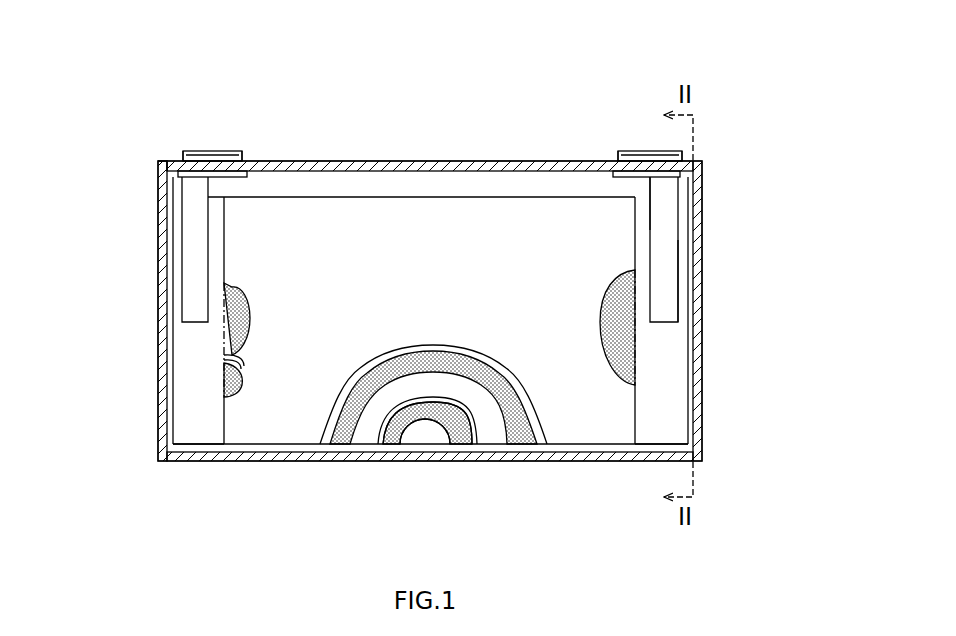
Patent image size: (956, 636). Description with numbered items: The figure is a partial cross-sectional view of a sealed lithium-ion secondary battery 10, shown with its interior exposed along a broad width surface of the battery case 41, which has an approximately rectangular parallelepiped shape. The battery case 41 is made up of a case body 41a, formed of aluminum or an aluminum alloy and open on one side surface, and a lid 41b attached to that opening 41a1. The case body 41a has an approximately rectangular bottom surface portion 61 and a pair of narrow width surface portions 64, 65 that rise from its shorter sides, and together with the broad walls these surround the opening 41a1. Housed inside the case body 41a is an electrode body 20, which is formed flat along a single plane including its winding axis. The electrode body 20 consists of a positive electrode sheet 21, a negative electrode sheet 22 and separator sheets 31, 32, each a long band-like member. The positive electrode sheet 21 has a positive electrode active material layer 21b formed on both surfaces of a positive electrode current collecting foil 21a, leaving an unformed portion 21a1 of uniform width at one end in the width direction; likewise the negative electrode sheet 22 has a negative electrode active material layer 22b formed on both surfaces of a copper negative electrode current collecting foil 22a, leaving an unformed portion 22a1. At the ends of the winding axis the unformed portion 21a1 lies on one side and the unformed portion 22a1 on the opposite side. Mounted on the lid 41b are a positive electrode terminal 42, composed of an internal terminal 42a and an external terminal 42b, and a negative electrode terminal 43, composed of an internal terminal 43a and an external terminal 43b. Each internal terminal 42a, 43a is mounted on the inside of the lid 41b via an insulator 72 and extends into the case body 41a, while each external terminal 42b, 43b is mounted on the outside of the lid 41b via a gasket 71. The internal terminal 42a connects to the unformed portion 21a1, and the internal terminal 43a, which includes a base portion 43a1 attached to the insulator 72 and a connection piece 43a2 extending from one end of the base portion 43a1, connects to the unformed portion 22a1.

The lithium-ion secondary battery 10 is at (500, 93).
The electrode body 20 is at (351, 194).
The positive electrode sheet 21 is at (393, 441).
The positive electrode current collecting foil 21a is at (155, 357).
The unformed portion 21a1 is at (197, 432).
The positive electrode active material layer 21b is at (249, 310).
The negative electrode sheet 22 is at (342, 441).
The negative electrode current collecting foil 22a is at (713, 321).
The unformed portion 22a1 is at (672, 428).
The negative electrode active material layer 22b is at (243, 376).
The first separator sheet 31 is at (247, 353).
The second separator sheet 32 is at (427, 441).
The battery case 41 is at (436, 277).
The case body 41a is at (156, 236).
The opening 41a1 is at (165, 158).
The lid 41b is at (428, 161).
The positive electrode terminal 42 is at (229, 109).
The internal terminal 42a is at (176, 179).
The external terminal 42b is at (233, 151).
The negative electrode terminal 43 is at (634, 108).
The internal terminal 43a is at (686, 245).
The base portion 43a1 is at (630, 177).
The connection piece 43a2 is at (668, 283).
The external terminal 43b is at (630, 153).
The bottom surface portion 61 is at (535, 463).
The narrow width surface portion 64 is at (164, 313).
The narrow width surface portion 65 is at (702, 313).
The gasket 71 is at (182, 154).
The insulator 72 is at (246, 177).